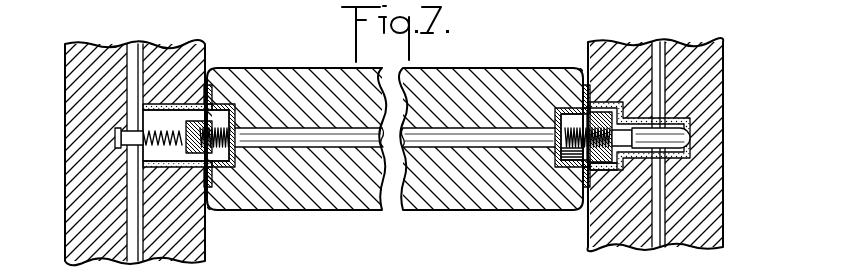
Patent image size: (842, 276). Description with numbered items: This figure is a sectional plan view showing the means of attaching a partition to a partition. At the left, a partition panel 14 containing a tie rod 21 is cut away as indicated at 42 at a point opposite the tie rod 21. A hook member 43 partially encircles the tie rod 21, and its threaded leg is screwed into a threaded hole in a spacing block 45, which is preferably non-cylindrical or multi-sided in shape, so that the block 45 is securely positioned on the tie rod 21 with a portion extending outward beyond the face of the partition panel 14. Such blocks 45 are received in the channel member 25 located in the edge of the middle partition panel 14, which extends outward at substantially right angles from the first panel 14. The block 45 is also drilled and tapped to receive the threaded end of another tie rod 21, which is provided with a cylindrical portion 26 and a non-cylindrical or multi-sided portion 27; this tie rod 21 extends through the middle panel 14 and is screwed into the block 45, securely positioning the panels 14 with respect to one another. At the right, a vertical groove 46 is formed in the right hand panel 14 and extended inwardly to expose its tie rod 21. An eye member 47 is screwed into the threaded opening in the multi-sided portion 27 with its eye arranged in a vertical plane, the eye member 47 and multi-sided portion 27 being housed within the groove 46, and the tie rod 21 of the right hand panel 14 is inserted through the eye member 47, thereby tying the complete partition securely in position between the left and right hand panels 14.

The partition panel 14 is at (82, 171).
The tie rod 21 is at (128, 88).
The channel member 25 is at (233, 210).
The cylindrical portion 26 is at (572, 123).
The non-cylindrical or multi-sided portion 27 is at (599, 120).
The cut away 42 is at (177, 102).
The hook member 43 is at (115, 137).
The spacing block 45 is at (177, 153).
The vertical groove 46 is at (598, 182).
The eye member 47 is at (690, 134).